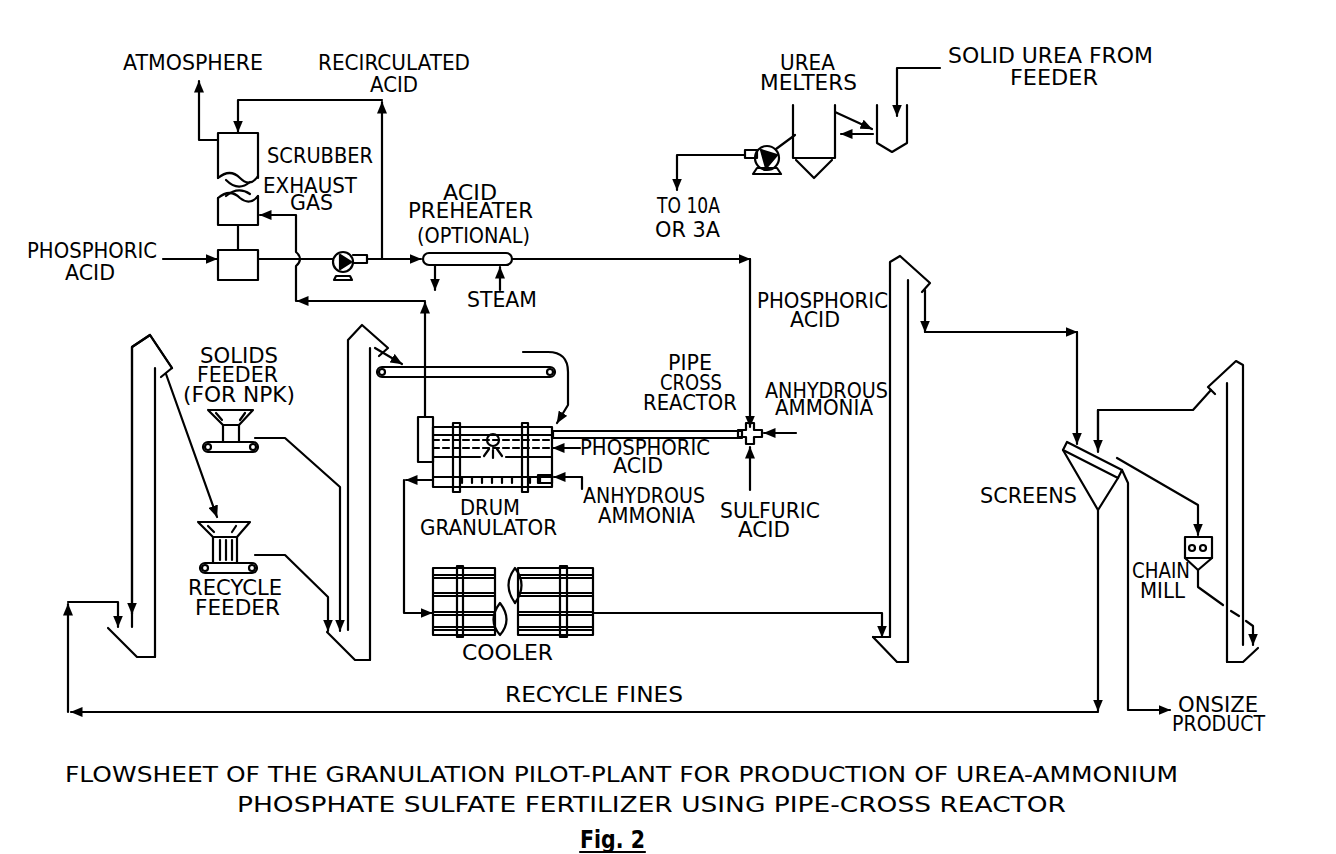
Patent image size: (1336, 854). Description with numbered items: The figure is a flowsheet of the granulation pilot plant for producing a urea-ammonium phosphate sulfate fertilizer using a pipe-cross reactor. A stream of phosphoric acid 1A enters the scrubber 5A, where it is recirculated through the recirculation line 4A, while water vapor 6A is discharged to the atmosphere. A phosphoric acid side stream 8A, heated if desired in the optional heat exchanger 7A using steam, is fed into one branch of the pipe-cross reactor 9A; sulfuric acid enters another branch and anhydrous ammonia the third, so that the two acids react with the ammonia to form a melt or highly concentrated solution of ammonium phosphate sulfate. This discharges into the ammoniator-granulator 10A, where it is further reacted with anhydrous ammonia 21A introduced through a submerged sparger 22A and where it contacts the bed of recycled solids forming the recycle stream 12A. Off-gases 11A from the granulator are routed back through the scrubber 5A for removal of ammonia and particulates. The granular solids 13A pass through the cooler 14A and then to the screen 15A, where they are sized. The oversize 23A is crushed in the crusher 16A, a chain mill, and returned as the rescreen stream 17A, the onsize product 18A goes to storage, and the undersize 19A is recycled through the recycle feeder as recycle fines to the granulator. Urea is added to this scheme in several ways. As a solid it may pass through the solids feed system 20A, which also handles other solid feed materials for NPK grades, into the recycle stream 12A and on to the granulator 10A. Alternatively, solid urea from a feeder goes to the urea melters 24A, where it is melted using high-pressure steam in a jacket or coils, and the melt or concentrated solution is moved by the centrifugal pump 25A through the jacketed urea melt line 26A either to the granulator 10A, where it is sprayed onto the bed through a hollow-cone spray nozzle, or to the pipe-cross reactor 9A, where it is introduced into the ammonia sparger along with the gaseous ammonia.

The phosphoric acid stream 1A is at (190, 262).
The recirculation line 4A is at (383, 128).
The scrubber 5A is at (218, 163).
The water vapor 6A is at (199, 140).
The optional heat exchanger 7A is at (512, 262).
The phosphoric acid side stream 8A is at (750, 343).
The pipe-cross reactor 9A is at (568, 428).
The ammoniator-granulator 10A is at (468, 420).
The off-gases 11A is at (427, 330).
The recycle stream 12A is at (547, 352).
The granular solids 13A is at (410, 617).
The cooler 14A is at (593, 578).
The screen 15A is at (1066, 466).
The crusher 16A is at (1185, 547).
The rescreen stream 17A is at (1113, 410).
The onsize product 18A is at (1130, 660).
The undersize 19A is at (270, 553).
The solids feed system 20A is at (270, 437).
The anhydrous ammonia 21A is at (597, 459).
The submerged sparger 22A is at (557, 491).
The oversize 23A is at (1137, 468).
The urea melters 24A is at (835, 158).
The centrifugal pump 25A is at (757, 177).
The urea melt line 26A is at (685, 153).